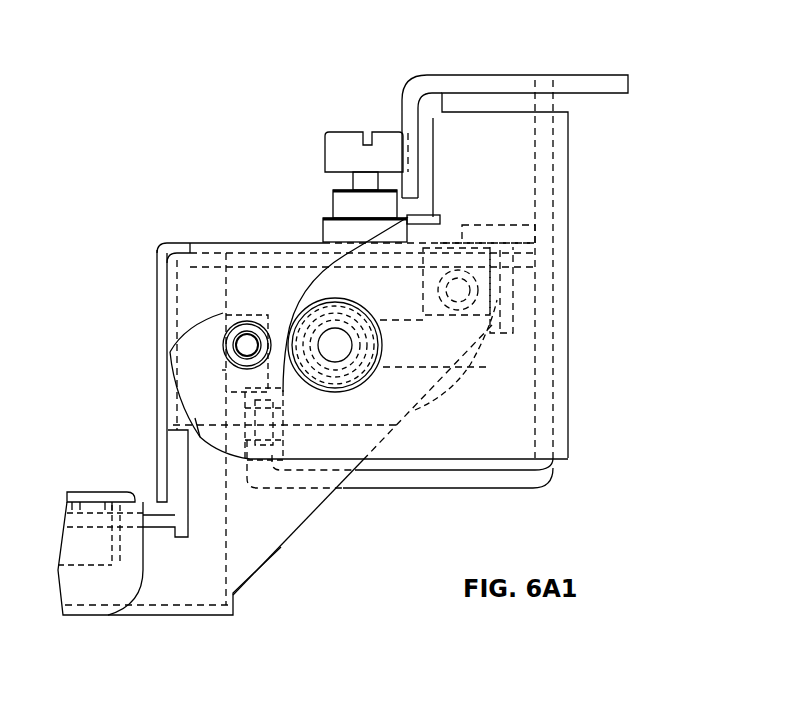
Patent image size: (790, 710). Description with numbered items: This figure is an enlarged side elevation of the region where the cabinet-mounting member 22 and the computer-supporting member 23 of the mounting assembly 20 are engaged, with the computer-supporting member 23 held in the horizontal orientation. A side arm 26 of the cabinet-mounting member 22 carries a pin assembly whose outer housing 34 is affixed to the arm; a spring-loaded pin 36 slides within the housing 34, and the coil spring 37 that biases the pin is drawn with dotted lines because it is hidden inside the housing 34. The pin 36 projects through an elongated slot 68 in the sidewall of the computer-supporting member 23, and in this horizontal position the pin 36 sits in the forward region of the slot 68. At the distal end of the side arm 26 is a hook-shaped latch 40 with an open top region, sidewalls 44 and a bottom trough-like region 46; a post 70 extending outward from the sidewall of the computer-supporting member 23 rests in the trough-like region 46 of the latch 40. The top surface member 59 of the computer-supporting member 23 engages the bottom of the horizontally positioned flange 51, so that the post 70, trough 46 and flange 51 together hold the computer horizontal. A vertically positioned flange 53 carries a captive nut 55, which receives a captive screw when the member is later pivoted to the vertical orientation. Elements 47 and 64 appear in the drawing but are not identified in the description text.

The mounting assembly 20 is at (663, 248).
The cabinet-mounting member 22 is at (579, 323).
The computer-supporting member 23 is at (97, 587).
The side arm 26 is at (398, 447).
The outer housing 34 is at (375, 315).
The spring-loaded pin 36 is at (345, 343).
The coil spring 37 is at (400, 368).
The hook-shaped latch 40 is at (203, 368).
The sidewall 44 is at (220, 350).
The bottom trough-like region 46 is at (222, 370).
The adjustment screw 47 is at (254, 302).
The horizontally positioned flange 51 is at (499, 228).
The vertically positioned flange 53 is at (195, 418).
The captive nut 55 is at (285, 430).
The top surface member 59 is at (445, 242).
The cap 64 is at (93, 492).
The elongated slot 68 is at (455, 335).
The post 70 is at (233, 320).